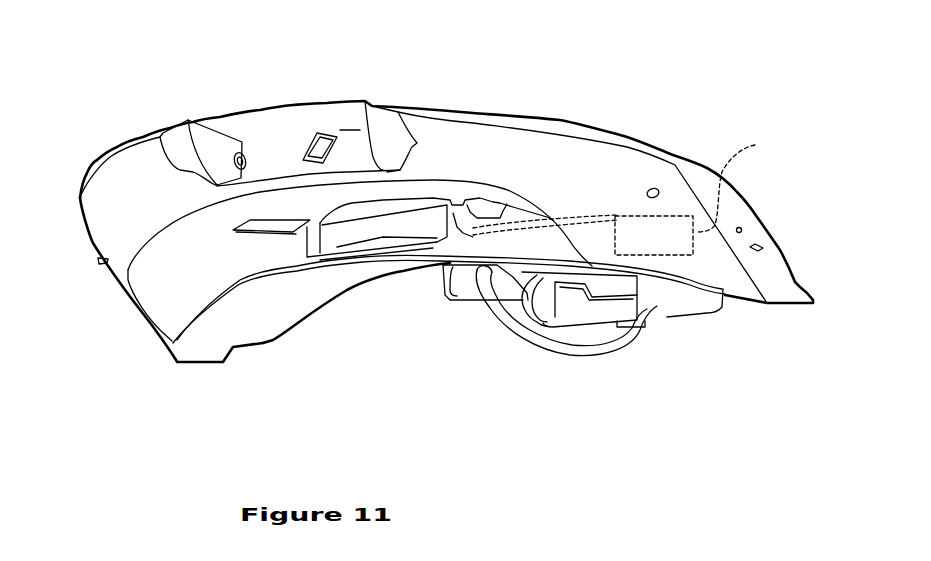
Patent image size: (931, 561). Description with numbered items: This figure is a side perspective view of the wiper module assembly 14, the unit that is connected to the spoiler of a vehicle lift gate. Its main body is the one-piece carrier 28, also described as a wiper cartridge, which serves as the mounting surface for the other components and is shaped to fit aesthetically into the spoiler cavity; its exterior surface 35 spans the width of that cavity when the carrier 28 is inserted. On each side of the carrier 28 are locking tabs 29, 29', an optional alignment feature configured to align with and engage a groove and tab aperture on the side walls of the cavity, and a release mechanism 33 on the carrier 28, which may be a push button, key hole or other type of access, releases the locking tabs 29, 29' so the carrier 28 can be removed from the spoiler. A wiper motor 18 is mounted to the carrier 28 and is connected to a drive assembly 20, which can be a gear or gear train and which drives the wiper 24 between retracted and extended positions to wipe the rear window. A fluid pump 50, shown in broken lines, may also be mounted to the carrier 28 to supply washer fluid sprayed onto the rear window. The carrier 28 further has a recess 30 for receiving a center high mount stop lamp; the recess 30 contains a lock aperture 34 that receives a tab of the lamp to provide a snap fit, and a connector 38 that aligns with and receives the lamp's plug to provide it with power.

The wiper module assembly 14 is at (289, 340).
The wiper motor 18 is at (657, 310).
The drive assembly 20 is at (470, 288).
The wiper 24 is at (400, 270).
The carrier 28 is at (518, 88).
The locking tab 29 is at (80, 290).
The locking tab 29' is at (786, 218).
The recess 30 is at (273, 122).
The release mechanism 33 is at (647, 191).
The lock aperture 34 is at (320, 138).
The exterior surface 35 is at (582, 177).
The connector 38 is at (242, 143).
The fluid pump 50 is at (755, 146).